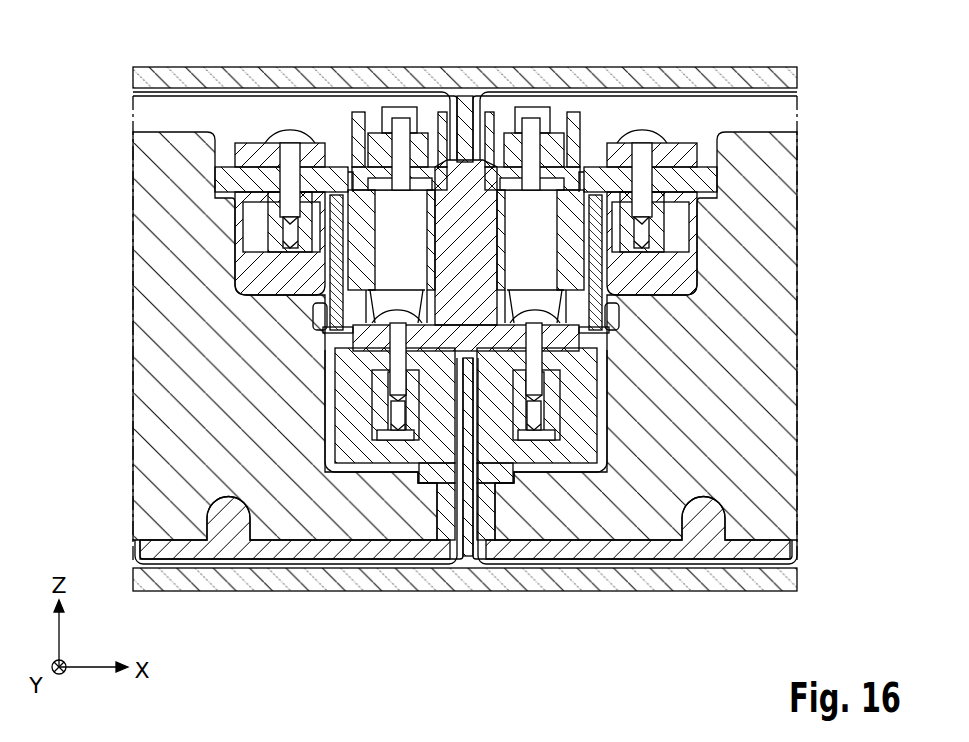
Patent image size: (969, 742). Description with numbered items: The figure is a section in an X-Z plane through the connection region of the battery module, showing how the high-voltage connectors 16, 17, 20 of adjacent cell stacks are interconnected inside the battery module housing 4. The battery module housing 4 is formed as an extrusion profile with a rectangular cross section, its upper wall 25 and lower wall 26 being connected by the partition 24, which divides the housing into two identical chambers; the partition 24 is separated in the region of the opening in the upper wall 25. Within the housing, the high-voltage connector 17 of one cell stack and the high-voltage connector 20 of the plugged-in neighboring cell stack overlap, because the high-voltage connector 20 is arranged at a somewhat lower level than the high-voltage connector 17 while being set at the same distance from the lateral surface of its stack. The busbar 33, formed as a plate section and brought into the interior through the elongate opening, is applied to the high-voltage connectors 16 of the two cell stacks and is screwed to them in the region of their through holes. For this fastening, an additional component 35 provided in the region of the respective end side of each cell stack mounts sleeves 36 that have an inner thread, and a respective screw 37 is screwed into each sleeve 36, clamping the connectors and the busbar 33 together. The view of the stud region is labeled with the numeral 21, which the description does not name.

The battery module housing 4 is at (538, 80).
The high-voltage connector 16 is at (375, 390).
The high-voltage connector 17 is at (245, 150).
The high-voltage connector 20 is at (222, 177).
The contact stud 21 is at (426, 108).
The partition 24 is at (465, 508).
The upper wall 25 is at (508, 75).
The lower wall 26 is at (597, 592).
The busbar 33 is at (560, 333).
The additional component 35 is at (195, 323).
The sleeve 36 is at (277, 230).
The screw 37 is at (292, 133).